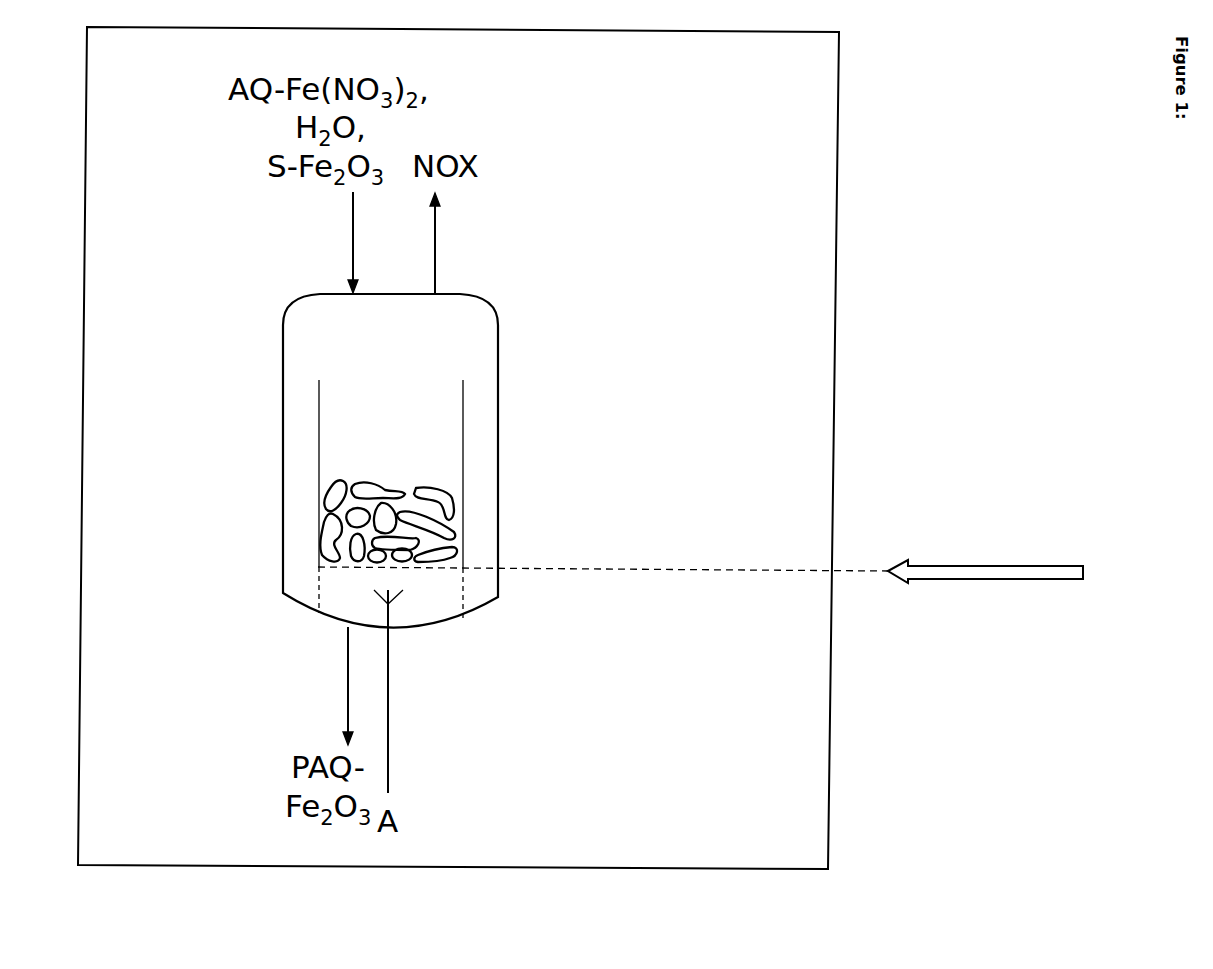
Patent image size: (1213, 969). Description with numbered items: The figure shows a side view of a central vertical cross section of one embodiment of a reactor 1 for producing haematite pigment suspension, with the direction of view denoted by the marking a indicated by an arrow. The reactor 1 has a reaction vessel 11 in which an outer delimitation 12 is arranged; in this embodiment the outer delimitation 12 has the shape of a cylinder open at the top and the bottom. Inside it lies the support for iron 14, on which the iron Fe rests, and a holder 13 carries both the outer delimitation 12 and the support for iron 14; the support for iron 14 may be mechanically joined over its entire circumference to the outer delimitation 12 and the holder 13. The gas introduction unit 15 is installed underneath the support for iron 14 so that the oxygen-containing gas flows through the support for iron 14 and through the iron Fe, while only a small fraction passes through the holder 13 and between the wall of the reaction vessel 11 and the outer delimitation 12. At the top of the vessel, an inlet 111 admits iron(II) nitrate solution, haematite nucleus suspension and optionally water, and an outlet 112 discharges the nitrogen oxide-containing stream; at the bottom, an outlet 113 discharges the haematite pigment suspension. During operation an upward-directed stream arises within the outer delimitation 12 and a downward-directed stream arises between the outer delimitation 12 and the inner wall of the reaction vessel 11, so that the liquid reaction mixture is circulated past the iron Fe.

The reactor 1 is at (813, 320).
The reaction vessel 11 is at (283, 412).
The inlet for iron(II) nitrate solution, haematite nucleus suspension and optionally 111 is at (352, 290).
The outlet for NOX 112 is at (437, 293).
The outlet for haematite pigment suspension 113 is at (348, 623).
The outer delimitation 12 is at (319, 457).
The holder 13 is at (305, 593).
The support for iron 14 is at (377, 567).
The gas introduction unit 15 is at (400, 603).
The direction of view a is at (995, 573).
The iron Fe is at (423, 497).